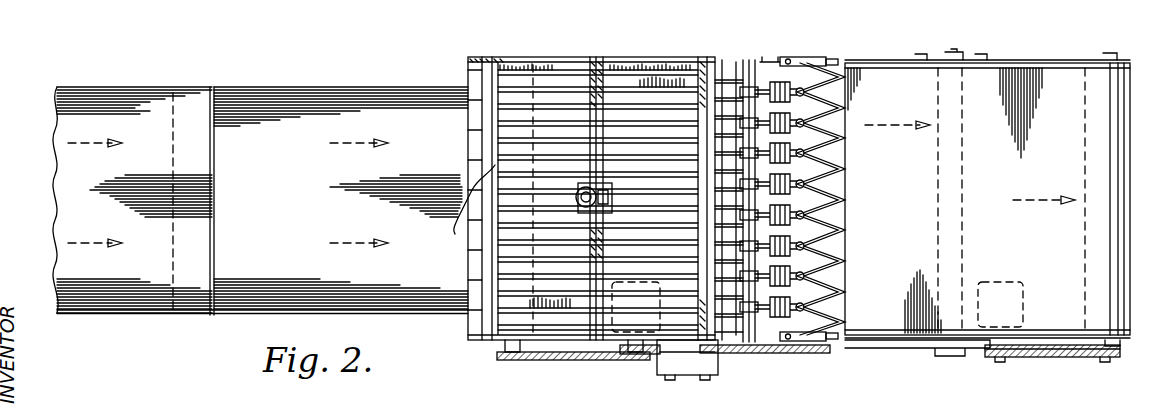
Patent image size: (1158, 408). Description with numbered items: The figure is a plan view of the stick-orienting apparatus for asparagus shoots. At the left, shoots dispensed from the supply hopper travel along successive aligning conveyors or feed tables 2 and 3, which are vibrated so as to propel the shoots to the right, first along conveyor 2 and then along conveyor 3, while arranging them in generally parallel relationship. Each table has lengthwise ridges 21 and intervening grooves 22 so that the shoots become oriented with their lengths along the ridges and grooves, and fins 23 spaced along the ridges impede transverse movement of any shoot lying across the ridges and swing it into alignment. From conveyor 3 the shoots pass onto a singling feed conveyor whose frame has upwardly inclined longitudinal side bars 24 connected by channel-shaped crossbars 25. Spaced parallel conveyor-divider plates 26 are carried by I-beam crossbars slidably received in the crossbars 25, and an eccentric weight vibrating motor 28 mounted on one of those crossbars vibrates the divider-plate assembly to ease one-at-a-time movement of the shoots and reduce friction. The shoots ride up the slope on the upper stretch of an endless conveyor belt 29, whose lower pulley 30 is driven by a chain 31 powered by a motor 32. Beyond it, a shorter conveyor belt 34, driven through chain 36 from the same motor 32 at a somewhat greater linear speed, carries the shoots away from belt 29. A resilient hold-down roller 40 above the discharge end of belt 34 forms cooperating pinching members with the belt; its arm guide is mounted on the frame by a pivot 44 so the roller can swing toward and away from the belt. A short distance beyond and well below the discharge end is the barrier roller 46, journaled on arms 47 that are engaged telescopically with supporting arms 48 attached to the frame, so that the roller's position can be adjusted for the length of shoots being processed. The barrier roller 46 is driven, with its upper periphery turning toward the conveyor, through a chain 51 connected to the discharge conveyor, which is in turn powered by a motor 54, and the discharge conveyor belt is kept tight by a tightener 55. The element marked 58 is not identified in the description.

The aligning conveyor 2 is at (124, 86).
The aligning conveyor 3 is at (298, 86).
The ridges 21 is at (112, 300).
The grooves 22 is at (57, 300).
The fins 23 is at (278, 127).
The longitudinal side bars 24 is at (540, 335).
The crossbars 25 is at (598, 60).
The conveyor-divider plates 26 is at (680, 100).
The eccentric weight vibrating motor 28 is at (593, 184).
The endless conveyor belt 29 is at (545, 92).
The lower pulley 30 is at (495, 310).
The chain 31 is at (573, 360).
The motor 32 is at (623, 323).
The conveyor belt 34 is at (745, 325).
The chain 36 is at (662, 352).
The resilient hold-down roller 40 is at (797, 84).
The pivot 44 is at (752, 62).
The barrier roller 46 is at (832, 68).
The arms 47 is at (815, 60).
The supporting arms 48 is at (765, 62).
The chain 51 is at (772, 352).
The motor 54 is at (1013, 308).
The tightener 55 is at (956, 262).
The base plate 58 is at (1090, 355).